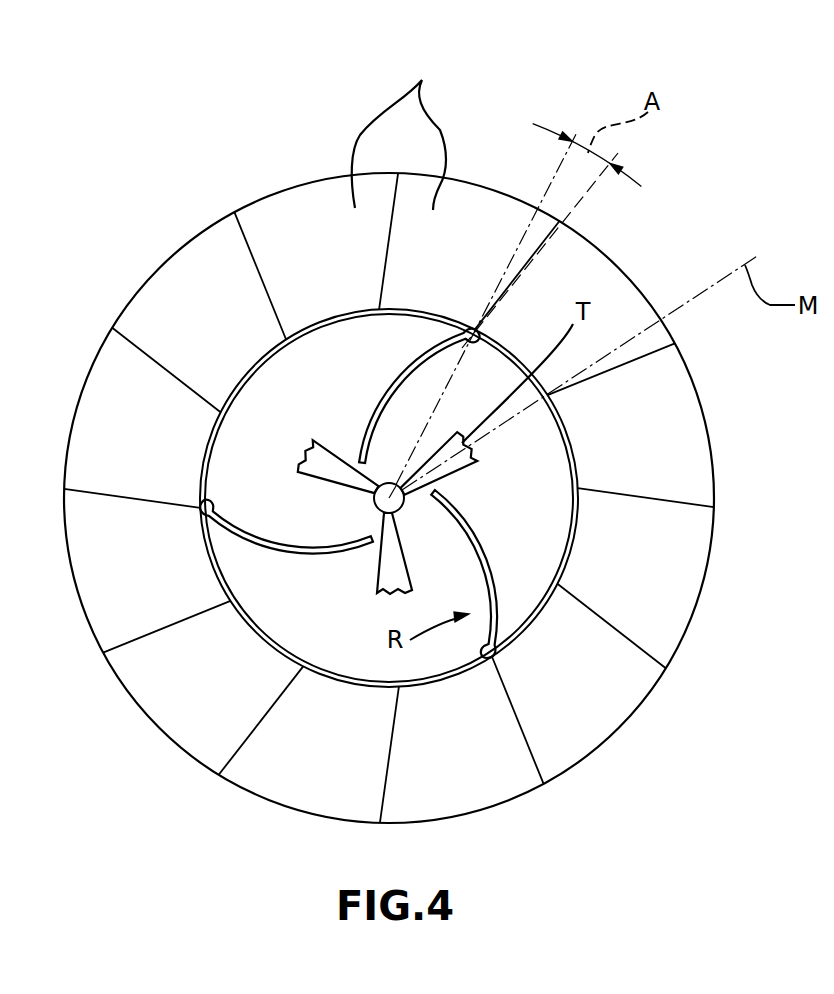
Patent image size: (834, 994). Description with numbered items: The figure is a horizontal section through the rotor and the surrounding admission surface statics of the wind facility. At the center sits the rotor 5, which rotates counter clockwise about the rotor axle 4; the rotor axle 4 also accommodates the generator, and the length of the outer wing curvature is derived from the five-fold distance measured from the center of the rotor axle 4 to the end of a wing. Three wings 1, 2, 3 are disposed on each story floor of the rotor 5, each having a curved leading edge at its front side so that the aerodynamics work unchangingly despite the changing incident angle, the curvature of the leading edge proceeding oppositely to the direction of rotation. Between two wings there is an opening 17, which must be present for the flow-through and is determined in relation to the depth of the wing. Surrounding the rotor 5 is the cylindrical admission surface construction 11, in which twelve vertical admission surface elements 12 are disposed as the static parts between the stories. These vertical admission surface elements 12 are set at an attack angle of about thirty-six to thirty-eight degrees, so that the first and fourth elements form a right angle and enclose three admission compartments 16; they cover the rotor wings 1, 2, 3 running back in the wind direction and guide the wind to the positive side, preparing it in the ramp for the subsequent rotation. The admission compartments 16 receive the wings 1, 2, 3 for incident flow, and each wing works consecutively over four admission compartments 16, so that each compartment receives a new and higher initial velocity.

The wing 1 is at (378, 372).
The wing 2 is at (286, 555).
The wing 3 is at (495, 570).
The rotor axle 4 is at (403, 503).
The rotor 5 is at (300, 397).
The cylindrical admission surface construction 11 is at (215, 248).
The vertical admission surface element 12 is at (142, 632).
The admission compartment 16 is at (399, 129).
The opening 17 is at (345, 520).